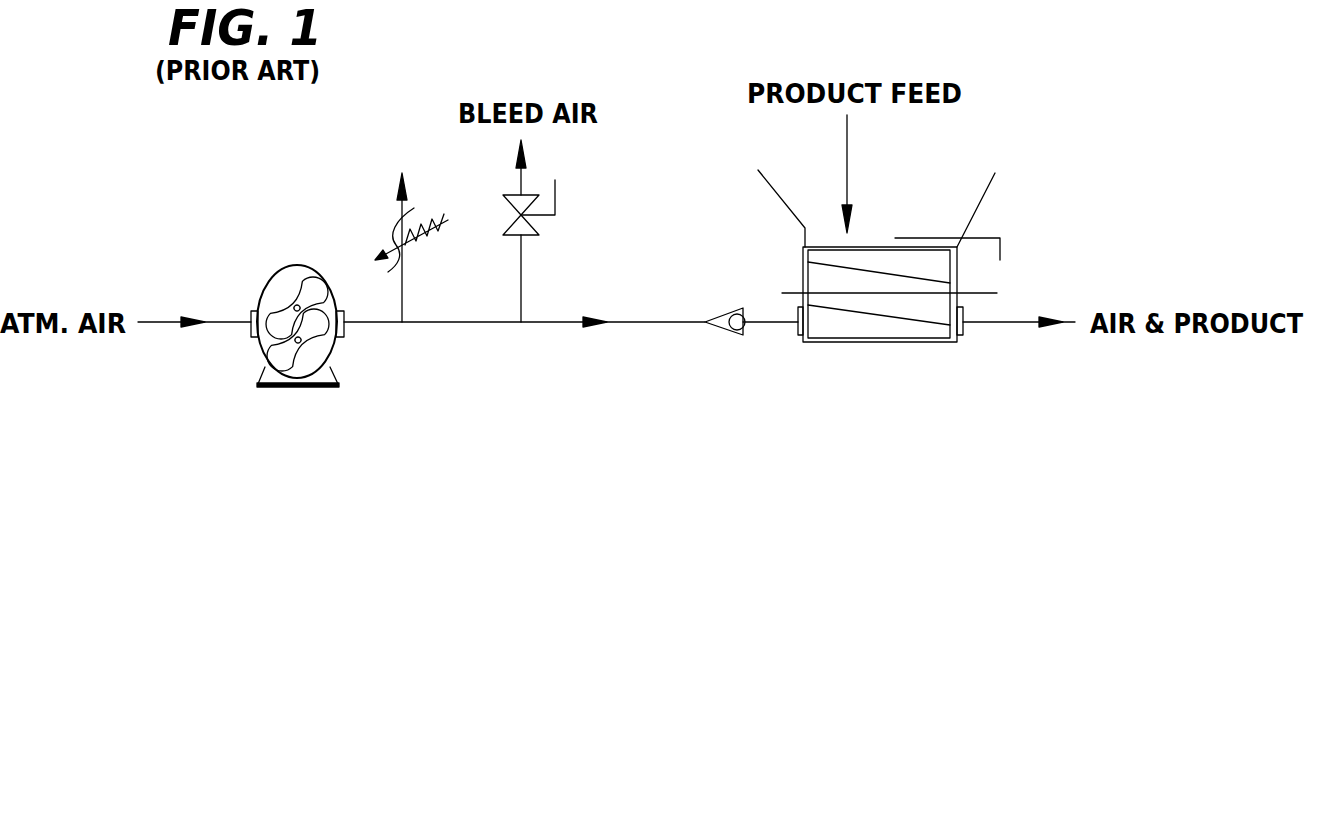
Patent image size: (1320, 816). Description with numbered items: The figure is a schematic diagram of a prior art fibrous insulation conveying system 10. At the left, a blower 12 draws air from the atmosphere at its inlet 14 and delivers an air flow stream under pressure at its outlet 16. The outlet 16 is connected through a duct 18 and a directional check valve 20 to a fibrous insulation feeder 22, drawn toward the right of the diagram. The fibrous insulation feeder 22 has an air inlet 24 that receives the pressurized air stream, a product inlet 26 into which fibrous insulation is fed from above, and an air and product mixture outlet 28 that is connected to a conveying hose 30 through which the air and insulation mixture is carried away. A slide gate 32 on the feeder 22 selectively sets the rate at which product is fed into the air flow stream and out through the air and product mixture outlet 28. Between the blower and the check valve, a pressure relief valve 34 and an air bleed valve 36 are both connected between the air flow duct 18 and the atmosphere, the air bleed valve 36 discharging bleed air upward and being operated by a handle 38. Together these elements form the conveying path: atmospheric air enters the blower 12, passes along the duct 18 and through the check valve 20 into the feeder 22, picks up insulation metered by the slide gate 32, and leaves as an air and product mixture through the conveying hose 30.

The conveying system 10 is at (677, 171).
The blower 12 is at (312, 259).
The inlet 14 is at (246, 309).
The outlet 16 is at (353, 333).
The duct 18 is at (483, 323).
The directional check valve 20 is at (718, 327).
The fibrous insulation feeder 22 is at (991, 201).
The air inlet 24 is at (793, 342).
The product inlet 26 is at (893, 228).
The air and product mixture outlet 28 is at (970, 336).
The conveying hose 30 is at (1026, 331).
The slide gate 32 is at (985, 238).
The pressure relief valve 34 is at (386, 219).
The air bleed valve 36 is at (504, 218).
The handle 38 is at (555, 206).